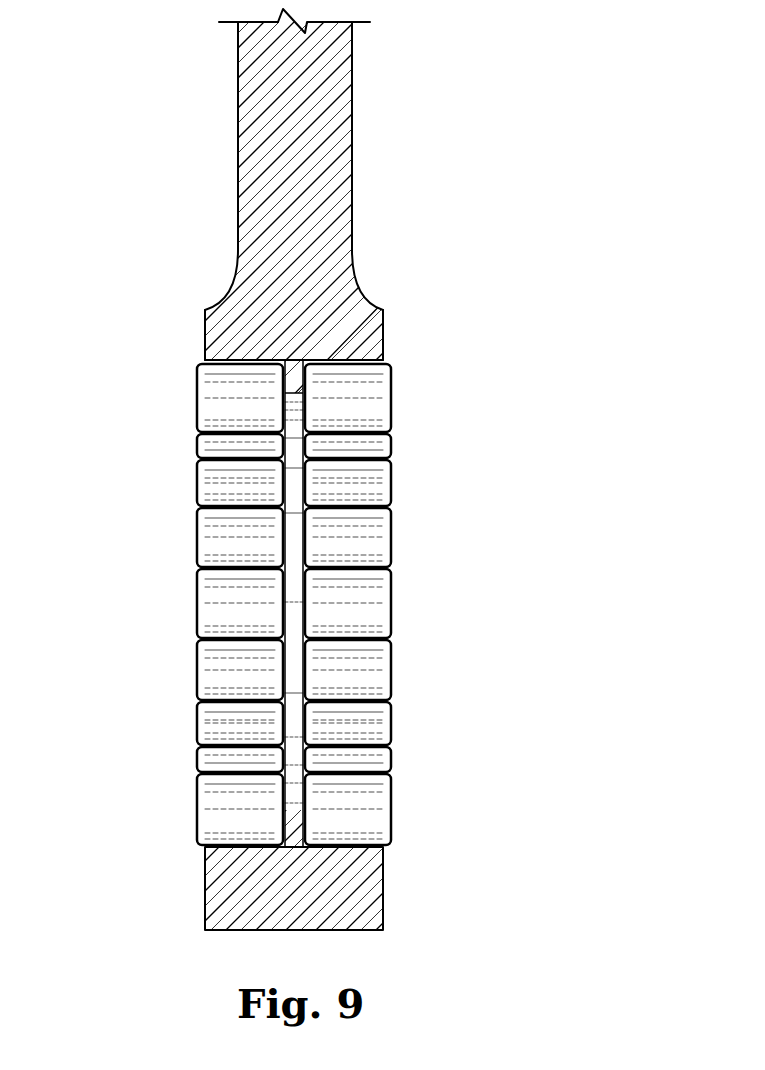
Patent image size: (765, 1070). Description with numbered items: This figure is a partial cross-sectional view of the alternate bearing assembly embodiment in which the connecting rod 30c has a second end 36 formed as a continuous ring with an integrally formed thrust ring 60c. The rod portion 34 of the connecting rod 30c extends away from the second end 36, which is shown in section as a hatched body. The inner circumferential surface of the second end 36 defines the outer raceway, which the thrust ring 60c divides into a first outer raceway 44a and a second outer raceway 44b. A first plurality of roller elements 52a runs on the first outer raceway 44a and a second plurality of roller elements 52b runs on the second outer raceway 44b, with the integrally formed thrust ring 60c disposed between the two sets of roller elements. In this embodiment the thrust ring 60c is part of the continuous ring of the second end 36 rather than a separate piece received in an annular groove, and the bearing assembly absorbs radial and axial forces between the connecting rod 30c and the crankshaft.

The connecting rod 30c is at (148, 206).
The rod portion 34 is at (352, 115).
The second end 36 is at (357, 930).
The first outer raceway 44a is at (256, 364).
The second outer raceway 44b is at (333, 364).
The first plurality of roller elements 52a is at (195, 359).
The second plurality of roller elements 52b is at (398, 359).
The thrust ring 60c is at (293, 810).